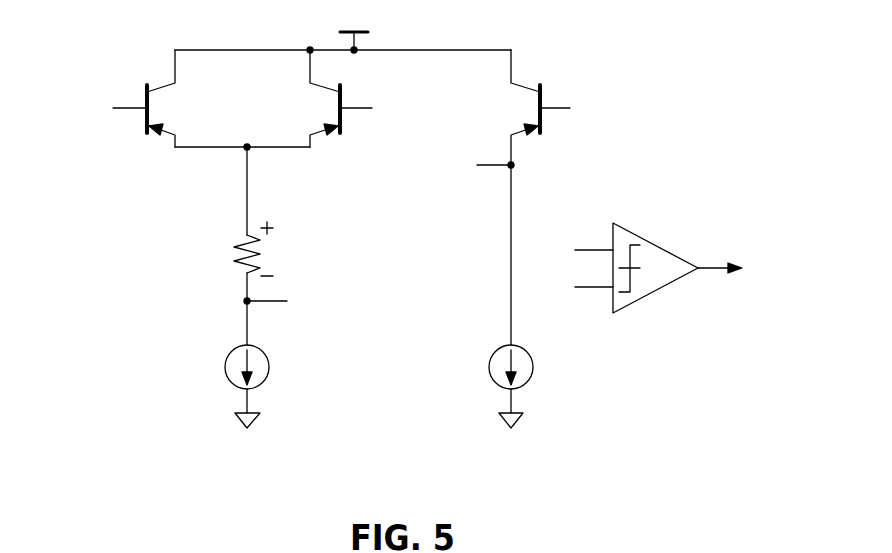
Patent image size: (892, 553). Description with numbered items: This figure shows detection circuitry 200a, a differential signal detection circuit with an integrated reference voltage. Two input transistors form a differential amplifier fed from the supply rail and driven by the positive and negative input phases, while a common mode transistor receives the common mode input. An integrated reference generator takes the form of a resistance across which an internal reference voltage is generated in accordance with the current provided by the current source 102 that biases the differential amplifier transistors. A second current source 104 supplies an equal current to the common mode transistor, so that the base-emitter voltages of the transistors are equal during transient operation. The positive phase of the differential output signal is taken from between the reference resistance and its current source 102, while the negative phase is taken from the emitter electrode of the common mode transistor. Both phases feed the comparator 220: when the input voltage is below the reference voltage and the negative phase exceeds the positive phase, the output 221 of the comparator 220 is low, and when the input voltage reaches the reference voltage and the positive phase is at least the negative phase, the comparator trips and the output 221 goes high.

The detection circuitry 200a is at (437, 264).
The current source 102 is at (224, 366).
The current source 104 is at (534, 365).
The comparator 220 is at (626, 303).
The output 221 is at (712, 266).